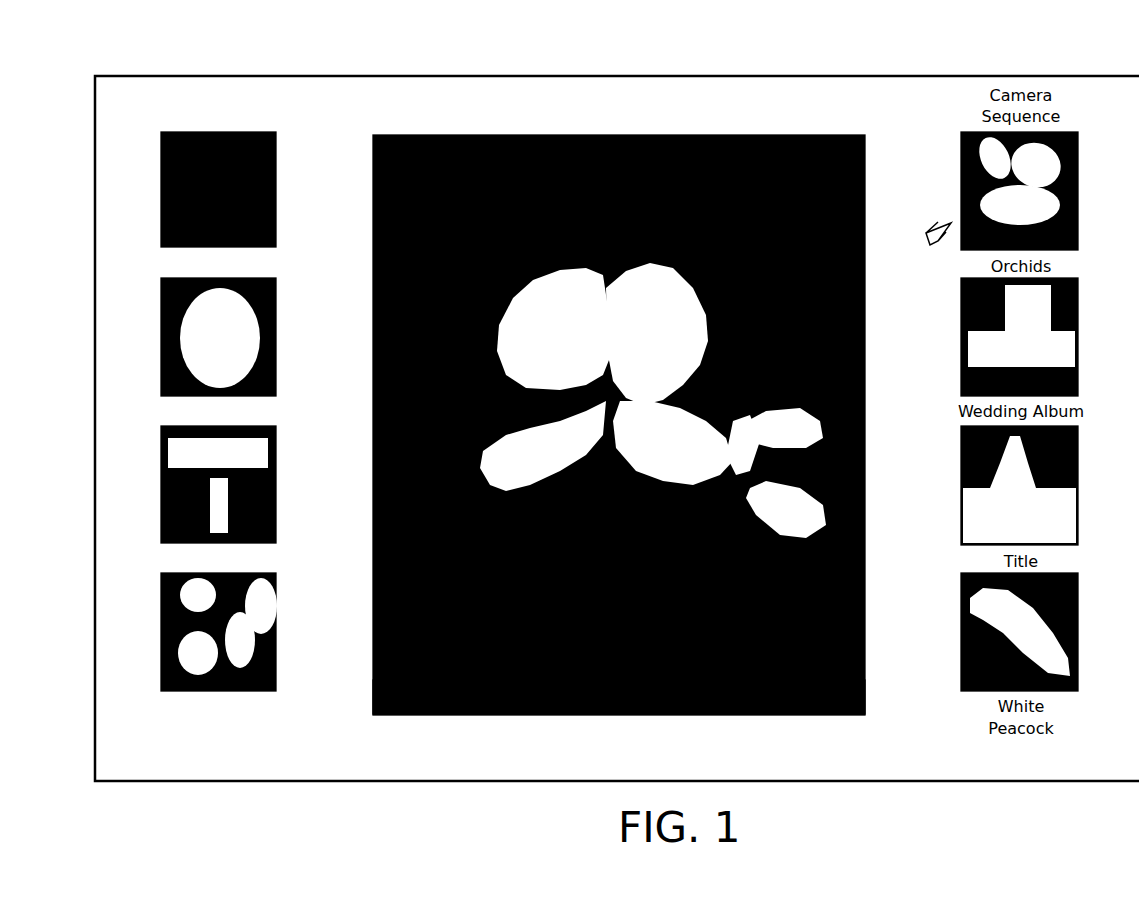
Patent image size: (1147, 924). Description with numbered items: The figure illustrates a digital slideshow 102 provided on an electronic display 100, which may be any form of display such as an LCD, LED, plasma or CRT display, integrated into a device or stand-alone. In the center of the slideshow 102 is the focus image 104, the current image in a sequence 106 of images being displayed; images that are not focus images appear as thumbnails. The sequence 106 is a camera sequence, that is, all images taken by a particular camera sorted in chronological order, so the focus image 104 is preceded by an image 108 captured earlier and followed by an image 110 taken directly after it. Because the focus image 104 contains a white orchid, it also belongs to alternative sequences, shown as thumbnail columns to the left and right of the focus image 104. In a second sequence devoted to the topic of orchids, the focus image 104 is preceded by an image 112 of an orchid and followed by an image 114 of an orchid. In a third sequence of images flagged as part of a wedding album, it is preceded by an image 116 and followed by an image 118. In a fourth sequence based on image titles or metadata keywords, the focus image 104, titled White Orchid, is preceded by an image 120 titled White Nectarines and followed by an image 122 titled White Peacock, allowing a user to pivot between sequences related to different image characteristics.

The display 100 is at (692, 98).
The digital slideshow 102 is at (123, 178).
The focus image 104 is at (370, 424).
The sequence of images 106 is at (367, 688).
The preceding image in camera sequence 108 is at (293, 135).
The following image in camera sequence 110 is at (1092, 133).
The preceding orchid image 112 is at (293, 283).
The following orchid image 114 is at (1092, 283).
The preceding wedding album image 116 is at (293, 456).
The following wedding album image 118 is at (1092, 457).
The preceding title-based image 120 is at (293, 578).
The following title-based image 122 is at (1092, 578).